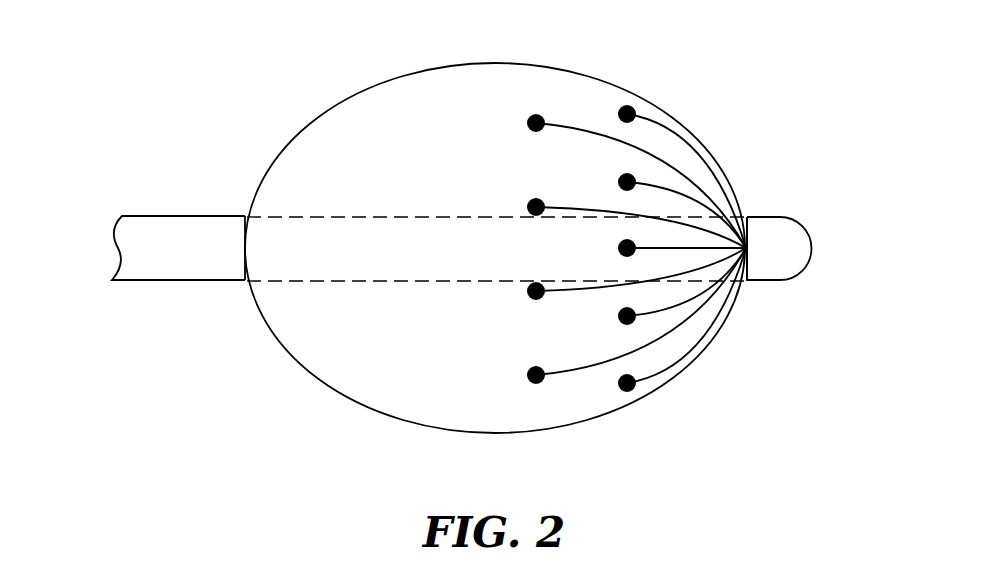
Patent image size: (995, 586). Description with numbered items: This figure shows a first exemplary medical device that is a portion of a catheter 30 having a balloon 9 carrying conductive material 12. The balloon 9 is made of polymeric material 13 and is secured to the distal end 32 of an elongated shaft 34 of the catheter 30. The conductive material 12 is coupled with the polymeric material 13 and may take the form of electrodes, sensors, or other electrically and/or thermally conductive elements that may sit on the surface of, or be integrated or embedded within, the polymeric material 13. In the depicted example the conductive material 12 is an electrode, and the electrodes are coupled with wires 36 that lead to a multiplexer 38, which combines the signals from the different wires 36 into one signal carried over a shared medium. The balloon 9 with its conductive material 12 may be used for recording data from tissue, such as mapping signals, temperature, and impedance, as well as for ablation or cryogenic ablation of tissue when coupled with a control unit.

The balloon 9 is at (262, 124).
The conductive material 12 is at (540, 114).
The polymeric material 13 is at (380, 115).
The catheter 30 is at (138, 310).
The distal end 32 is at (230, 308).
The elongated shaft 34 is at (762, 310).
The wires 36 is at (684, 141).
The multiplexer 38 is at (763, 214).